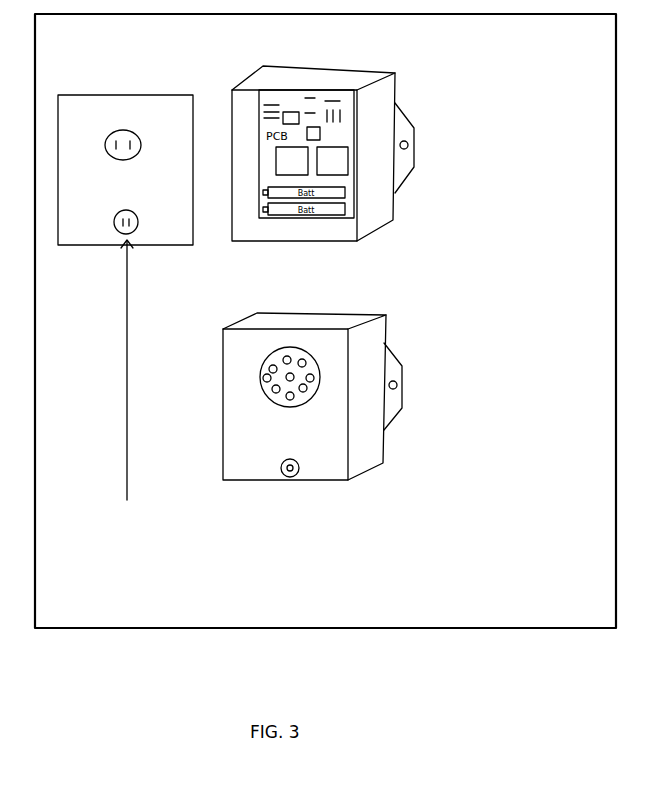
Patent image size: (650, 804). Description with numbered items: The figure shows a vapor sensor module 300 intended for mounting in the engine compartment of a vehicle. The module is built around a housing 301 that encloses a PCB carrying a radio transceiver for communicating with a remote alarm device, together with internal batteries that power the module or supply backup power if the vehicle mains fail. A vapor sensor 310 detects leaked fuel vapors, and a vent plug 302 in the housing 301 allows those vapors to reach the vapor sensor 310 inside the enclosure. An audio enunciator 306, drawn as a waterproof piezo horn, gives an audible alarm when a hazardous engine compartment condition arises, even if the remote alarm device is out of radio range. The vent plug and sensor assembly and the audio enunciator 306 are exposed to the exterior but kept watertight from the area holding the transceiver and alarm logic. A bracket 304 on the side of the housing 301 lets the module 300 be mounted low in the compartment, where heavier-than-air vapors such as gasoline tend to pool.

The vapor detection system 300 is at (443, 628).
The housing 301 is at (375, 465).
The vent plug 302 is at (313, 355).
The bracket 304 is at (410, 410).
The audio enunciator 306 is at (280, 472).
The vapor sensor 310 is at (122, 122).